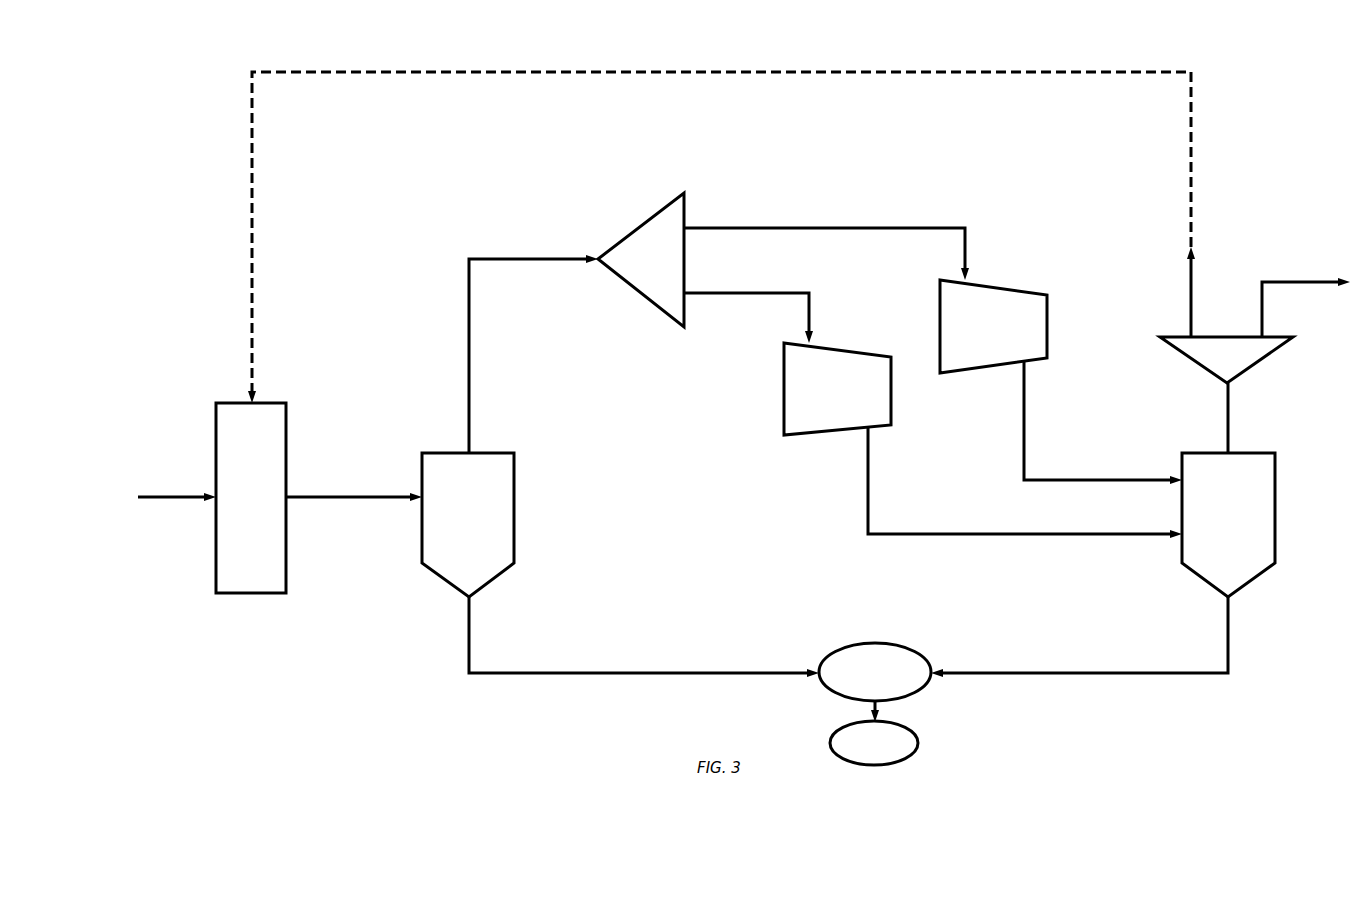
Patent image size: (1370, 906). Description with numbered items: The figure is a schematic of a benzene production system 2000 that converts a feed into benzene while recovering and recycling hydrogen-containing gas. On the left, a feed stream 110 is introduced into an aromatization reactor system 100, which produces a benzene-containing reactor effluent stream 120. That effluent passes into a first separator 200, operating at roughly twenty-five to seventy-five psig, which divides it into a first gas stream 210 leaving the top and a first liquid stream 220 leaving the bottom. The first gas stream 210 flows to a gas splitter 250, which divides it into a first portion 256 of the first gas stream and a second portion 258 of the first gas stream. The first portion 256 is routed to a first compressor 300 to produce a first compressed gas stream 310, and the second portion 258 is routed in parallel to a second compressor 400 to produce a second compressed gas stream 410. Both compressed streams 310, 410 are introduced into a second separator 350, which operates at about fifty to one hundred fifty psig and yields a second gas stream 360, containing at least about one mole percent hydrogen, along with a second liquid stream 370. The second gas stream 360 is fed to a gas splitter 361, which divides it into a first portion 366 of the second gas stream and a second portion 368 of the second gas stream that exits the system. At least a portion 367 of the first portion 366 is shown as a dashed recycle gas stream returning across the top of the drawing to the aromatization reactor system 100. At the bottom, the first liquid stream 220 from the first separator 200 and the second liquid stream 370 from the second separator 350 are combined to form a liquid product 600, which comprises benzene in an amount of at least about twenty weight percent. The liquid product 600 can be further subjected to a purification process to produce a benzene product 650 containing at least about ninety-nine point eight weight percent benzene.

The benzene production system 2000 is at (1294, 97).
The aromatization reactor system 100 is at (287, 570).
The feed stream 110 is at (190, 498).
The reactor effluent stream 120 is at (305, 497).
The first separator 200 is at (422, 540).
The first gas stream 210 is at (469, 391).
The first liquid stream 220 is at (469, 625).
The gas splitter 250 is at (640, 295).
The first portion of the first gas stream 256 is at (850, 230).
The second portion of the first gas stream 258 is at (765, 295).
The first compressor 300 is at (1008, 288).
The first compressed gas stream 310 is at (1114, 482).
The second separator 350 is at (1195, 575).
The second gas stream 360 is at (1228, 420).
The gas splitter 361 is at (1190, 360).
The first portion of the second gas stream 366 is at (1193, 285).
The recycled portion of first portion of the second gas stream 367 is at (1193, 155).
The second portion of the second gas stream 368 is at (1298, 283).
The second liquid stream 370 is at (1228, 623).
The second compressor 400 is at (856, 348).
The second compressed gas stream 410 is at (960, 534).
The liquid product 600 is at (850, 646).
The benzene product 650 is at (915, 730).